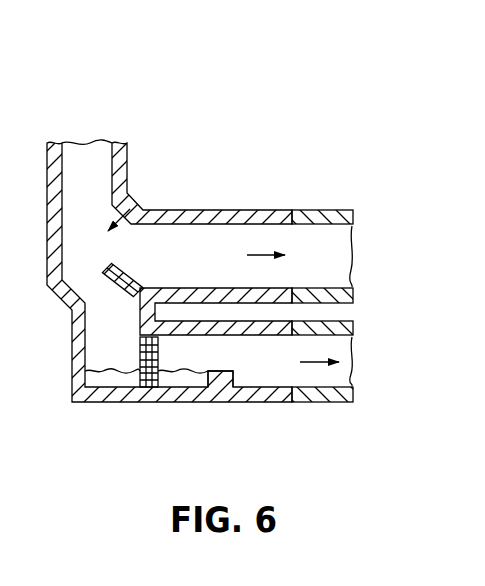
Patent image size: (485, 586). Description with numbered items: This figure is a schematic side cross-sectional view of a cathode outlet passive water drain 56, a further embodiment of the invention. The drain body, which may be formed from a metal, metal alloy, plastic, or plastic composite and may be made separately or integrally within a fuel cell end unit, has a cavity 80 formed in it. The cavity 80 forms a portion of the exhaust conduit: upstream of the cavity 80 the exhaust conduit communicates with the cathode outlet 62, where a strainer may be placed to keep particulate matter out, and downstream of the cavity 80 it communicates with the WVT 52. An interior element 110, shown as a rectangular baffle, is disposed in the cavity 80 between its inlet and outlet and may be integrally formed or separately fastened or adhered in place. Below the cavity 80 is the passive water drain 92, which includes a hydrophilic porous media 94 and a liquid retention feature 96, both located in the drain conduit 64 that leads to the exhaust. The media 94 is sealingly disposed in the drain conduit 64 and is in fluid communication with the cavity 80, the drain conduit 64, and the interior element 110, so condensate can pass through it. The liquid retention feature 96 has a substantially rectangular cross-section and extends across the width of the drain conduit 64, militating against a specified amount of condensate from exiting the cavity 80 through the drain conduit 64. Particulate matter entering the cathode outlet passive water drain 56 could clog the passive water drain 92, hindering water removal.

The cathode outlet passive water drain 56 is at (306, 84).
The cathode outlet 62 is at (128, 151).
The cavity 80 is at (130, 209).
The WVT 52 is at (358, 169).
The interior element 110 is at (206, 257).
The hydrophilic porous media 94 is at (140, 353).
The passive water drain 92 is at (233, 408).
The liquid retention feature 96 is at (235, 375).
The drain conduit 64 is at (327, 402).